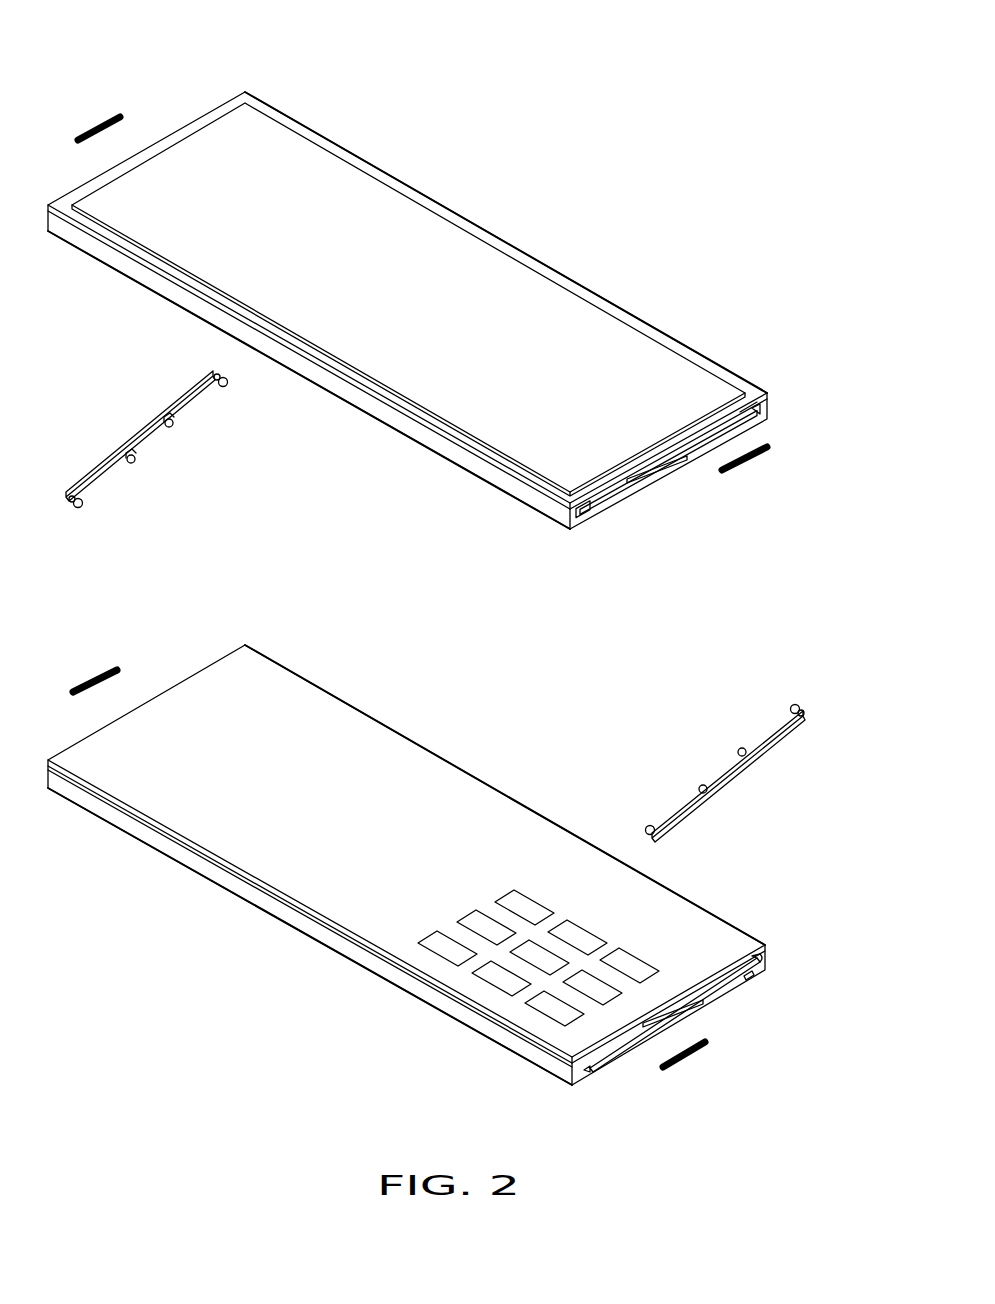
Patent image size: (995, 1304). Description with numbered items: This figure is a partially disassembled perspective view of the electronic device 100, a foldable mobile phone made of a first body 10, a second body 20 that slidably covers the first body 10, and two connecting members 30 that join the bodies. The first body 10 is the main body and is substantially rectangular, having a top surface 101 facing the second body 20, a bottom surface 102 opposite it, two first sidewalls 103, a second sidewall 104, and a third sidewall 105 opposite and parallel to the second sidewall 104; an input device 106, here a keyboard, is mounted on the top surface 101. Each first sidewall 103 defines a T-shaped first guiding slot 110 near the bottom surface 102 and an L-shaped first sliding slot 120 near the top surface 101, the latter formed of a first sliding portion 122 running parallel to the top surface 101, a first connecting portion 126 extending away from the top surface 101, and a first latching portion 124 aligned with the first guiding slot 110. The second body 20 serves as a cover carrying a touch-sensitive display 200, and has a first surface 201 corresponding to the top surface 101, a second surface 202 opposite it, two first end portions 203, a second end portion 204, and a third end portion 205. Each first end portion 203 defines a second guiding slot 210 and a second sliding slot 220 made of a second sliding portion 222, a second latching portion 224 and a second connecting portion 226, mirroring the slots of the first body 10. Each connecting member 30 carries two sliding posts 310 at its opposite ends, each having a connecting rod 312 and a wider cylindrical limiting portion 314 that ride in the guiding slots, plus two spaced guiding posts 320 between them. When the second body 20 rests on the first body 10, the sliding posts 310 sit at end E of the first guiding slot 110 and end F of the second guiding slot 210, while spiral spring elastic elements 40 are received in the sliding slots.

The electronic device 100 is at (515, 68).
The first body 10 is at (145, 668).
The second body 20 is at (155, 105).
The connecting member 30 is at (135, 432).
The elastic element 40 is at (762, 456).
The top surface 101 is at (320, 882).
The bottom surface 102 is at (354, 978).
The first sidewall 103 is at (603, 1065).
The second sidewall 104 is at (205, 862).
The third sidewall 105 is at (350, 690).
The input device 106 is at (515, 902).
The first guiding slot 110 is at (700, 1008).
The first sliding slot 120 is at (822, 888).
The first sliding portion 122 is at (707, 990).
The first latching portion 124 is at (745, 980).
The first connecting portion 126 is at (755, 962).
The display 200 is at (521, 300).
The first surface 201 is at (404, 456).
The second surface 202 is at (304, 128).
The first end portion 203 is at (760, 409).
The second end portion 204 is at (122, 257).
The third end portion 205 is at (421, 190).
The second guiding slot 210 is at (708, 415).
The second sliding slot 220 is at (769, 503).
The second sliding portion 222 is at (677, 467).
The second latching portion 224 is at (608, 508).
The second connecting portion 226 is at (578, 507).
The sliding post 310 is at (645, 830).
The connecting rod 312 is at (798, 710).
The limiting portion 314 is at (793, 712).
The guiding post 320 is at (703, 788).
The end E is at (587, 1073).
The end F is at (750, 418).